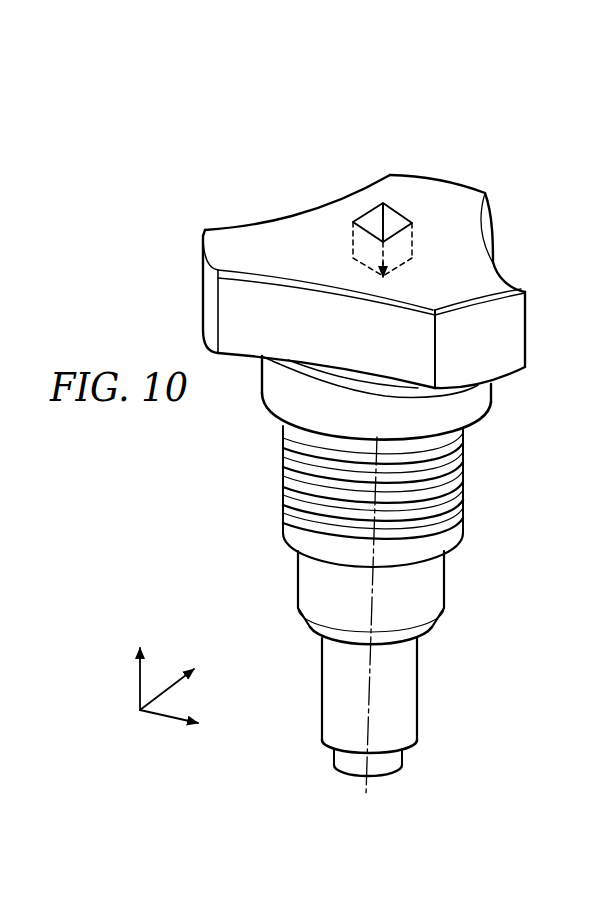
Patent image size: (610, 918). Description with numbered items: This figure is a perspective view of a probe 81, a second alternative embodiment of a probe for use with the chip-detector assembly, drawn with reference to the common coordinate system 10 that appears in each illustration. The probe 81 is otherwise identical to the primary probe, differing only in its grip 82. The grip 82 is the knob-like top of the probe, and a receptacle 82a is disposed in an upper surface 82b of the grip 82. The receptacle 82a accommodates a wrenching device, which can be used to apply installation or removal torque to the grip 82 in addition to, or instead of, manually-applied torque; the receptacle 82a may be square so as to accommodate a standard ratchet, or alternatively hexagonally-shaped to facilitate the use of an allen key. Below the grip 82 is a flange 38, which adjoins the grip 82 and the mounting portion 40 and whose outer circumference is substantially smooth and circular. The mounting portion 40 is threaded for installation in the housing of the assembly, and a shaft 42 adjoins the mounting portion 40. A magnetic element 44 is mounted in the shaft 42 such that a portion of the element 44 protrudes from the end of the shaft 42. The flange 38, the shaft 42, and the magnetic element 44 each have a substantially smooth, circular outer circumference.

The coordinate system 10 is at (160, 716).
The flange 38 is at (492, 405).
The mounting portion 40 is at (487, 515).
The shaft 42 is at (463, 632).
The magnetic element 44 is at (425, 775).
The probe 81 is at (394, 236).
The grip 82 is at (404, 257).
The receptacle 82a is at (377, 238).
The upper surface 82b is at (425, 188).